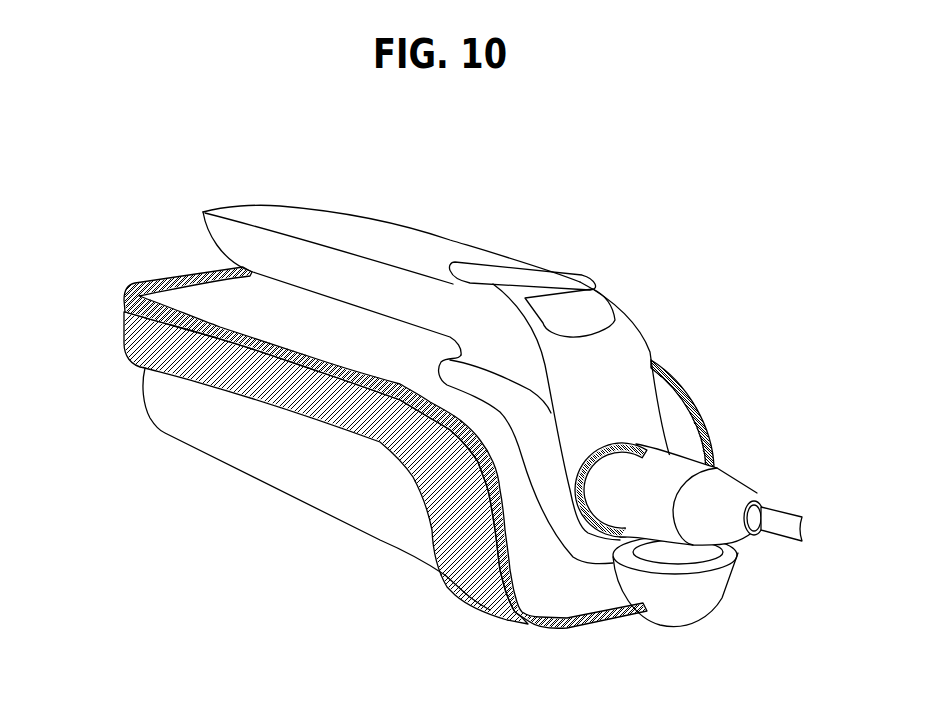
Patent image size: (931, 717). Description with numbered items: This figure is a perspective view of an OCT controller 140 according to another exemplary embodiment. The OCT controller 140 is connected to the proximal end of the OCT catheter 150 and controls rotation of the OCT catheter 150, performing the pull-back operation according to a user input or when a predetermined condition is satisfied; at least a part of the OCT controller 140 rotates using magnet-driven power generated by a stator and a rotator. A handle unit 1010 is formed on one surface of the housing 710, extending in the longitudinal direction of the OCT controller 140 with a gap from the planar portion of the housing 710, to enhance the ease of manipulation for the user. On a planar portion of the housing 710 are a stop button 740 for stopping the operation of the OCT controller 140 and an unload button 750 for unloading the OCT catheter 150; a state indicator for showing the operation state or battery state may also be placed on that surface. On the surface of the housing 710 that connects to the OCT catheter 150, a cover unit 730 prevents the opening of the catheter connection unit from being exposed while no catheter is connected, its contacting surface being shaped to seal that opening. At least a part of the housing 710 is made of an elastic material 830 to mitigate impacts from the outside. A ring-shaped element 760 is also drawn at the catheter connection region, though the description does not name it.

The handle unit 1010 is at (317, 222).
The housing 710 is at (178, 294).
The elastic material 830 is at (153, 330).
The stop button 740 is at (507, 263).
The unload button 750 is at (573, 281).
The OCT controller 140 is at (656, 261).
The connector ring 760 is at (627, 444).
The OCT catheter 150 is at (745, 497).
The cover unit 730 is at (700, 600).